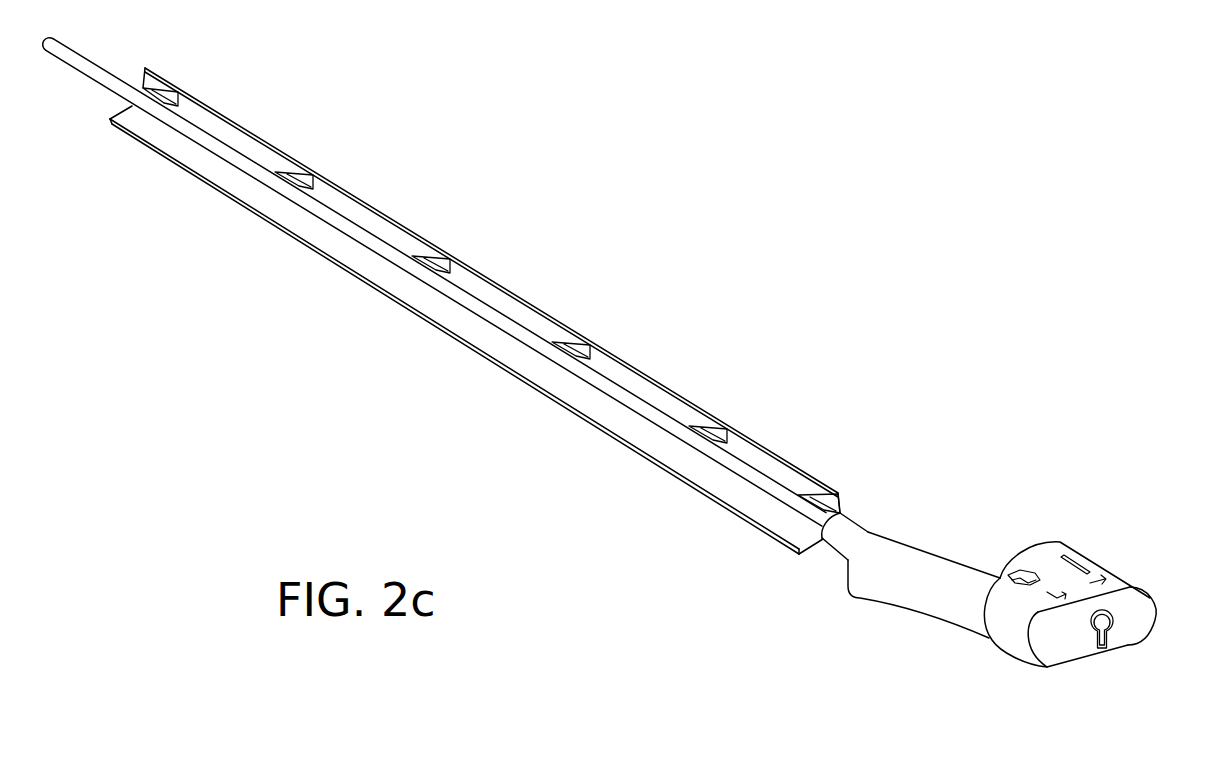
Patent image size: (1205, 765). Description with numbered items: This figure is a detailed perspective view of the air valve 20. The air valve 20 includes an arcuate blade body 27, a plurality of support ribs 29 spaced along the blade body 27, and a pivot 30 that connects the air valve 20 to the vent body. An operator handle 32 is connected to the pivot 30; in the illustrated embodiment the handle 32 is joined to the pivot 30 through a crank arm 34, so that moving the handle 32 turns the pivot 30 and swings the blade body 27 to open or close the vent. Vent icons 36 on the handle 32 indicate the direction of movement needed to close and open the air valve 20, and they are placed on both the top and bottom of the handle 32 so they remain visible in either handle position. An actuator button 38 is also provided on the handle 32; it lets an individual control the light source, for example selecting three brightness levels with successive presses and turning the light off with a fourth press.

The air valve 20 is at (413, 248).
The arcuate blade body 27 is at (693, 418).
The support ribs 29 is at (176, 92).
The pivot 30 is at (113, 80).
The operator handle 32 is at (1110, 567).
The crank arm 34 is at (907, 567).
The vent icons 36 is at (1033, 570).
The actuator button 38 is at (1100, 627).